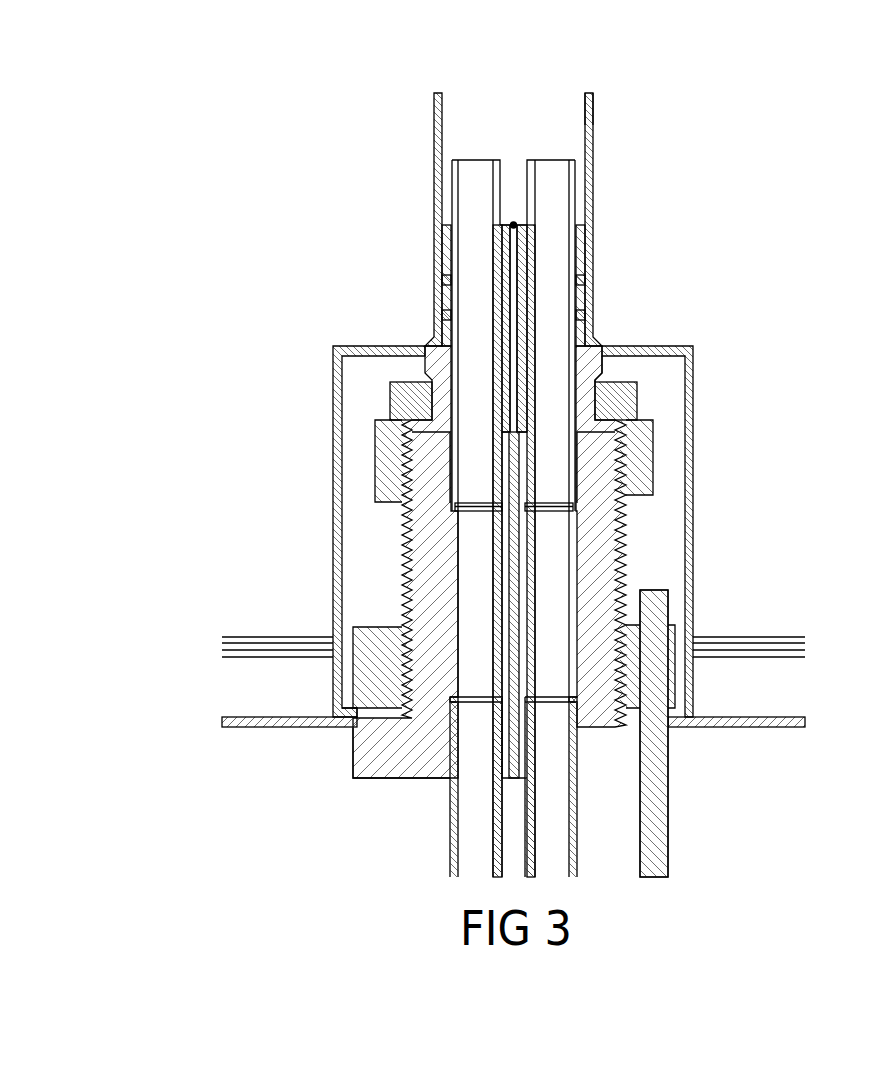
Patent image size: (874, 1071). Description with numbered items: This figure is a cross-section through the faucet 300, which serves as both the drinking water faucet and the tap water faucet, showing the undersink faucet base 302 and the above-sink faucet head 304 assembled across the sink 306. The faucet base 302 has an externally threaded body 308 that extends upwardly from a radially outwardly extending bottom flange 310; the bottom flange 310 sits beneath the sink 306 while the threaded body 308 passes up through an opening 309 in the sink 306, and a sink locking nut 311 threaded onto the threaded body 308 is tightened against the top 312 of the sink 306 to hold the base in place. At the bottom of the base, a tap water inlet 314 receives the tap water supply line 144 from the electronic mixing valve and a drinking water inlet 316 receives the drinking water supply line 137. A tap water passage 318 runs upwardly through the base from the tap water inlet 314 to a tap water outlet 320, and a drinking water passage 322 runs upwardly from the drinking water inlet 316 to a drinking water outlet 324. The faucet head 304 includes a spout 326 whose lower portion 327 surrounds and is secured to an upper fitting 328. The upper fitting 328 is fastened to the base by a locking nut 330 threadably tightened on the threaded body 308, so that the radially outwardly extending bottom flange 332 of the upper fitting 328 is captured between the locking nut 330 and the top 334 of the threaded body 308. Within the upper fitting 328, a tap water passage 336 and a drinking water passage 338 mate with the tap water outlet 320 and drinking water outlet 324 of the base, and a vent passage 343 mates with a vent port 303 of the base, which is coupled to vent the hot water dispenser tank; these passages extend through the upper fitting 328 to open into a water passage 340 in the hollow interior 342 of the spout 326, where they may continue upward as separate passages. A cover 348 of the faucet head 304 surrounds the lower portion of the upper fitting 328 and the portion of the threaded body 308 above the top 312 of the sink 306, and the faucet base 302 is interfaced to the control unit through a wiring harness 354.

The faucet 300 is at (400, 150).
The faucet base 302 is at (333, 793).
The vent port 303 is at (514, 430).
The faucet head 304 is at (695, 328).
The sink 306 is at (233, 686).
The threaded body 308 is at (403, 522).
The opening 309 is at (346, 728).
The bottom flange 310 is at (353, 755).
The sink locking nut 311 is at (375, 630).
The top of sink 312 is at (764, 717).
The tap water inlet 314 is at (450, 786).
The drinking water inlet 316 is at (577, 786).
The tap water passage 318 is at (465, 585).
The tap water outlet 320 is at (466, 500).
The drinking water passage 322 is at (566, 566).
The drinking water outlet 324 is at (556, 502).
The spout 326 is at (594, 140).
The lower portion 327 is at (322, 340).
The upper fitting 328 is at (434, 258).
The locking nut 330 is at (638, 392).
The bottom flange 332 is at (410, 425).
The top of threaded body 334 is at (606, 424).
The tap water passage 336 is at (470, 200).
The drinking water passage 338 is at (568, 194).
The water passage 340 is at (592, 120).
The interior 342 is at (497, 134).
The vent passage 343 is at (514, 222).
The cover 348 is at (625, 345).
The wiring harness 354 is at (668, 822).
The tap water supply line 144 is at (450, 845).
The drinking water supply line 137 is at (577, 845).